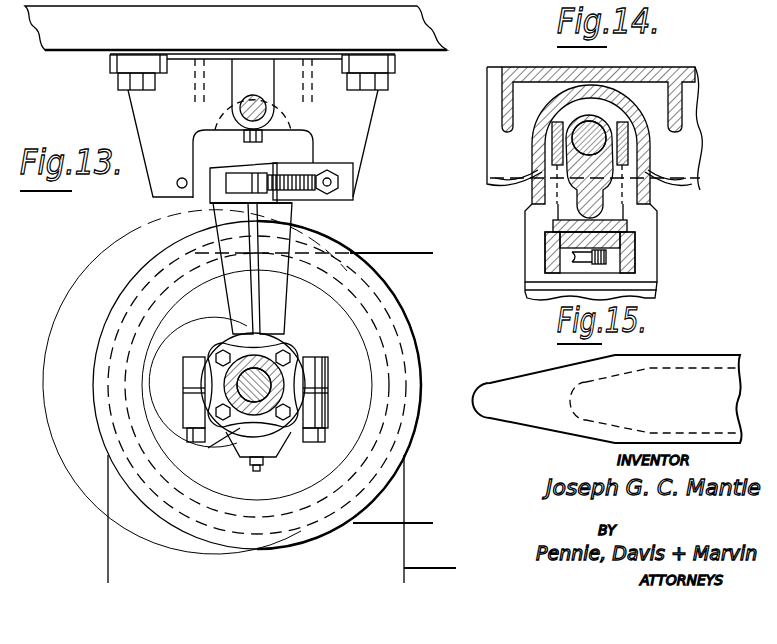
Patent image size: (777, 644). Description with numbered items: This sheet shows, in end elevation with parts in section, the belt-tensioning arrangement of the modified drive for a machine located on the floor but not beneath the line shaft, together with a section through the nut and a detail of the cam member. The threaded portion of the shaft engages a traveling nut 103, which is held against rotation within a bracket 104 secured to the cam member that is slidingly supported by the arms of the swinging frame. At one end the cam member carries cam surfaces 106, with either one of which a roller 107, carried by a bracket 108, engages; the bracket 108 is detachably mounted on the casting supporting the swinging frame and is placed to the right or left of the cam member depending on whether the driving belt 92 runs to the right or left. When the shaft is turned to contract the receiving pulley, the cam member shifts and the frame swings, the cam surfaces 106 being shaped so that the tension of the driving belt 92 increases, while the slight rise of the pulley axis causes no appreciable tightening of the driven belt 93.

In FIG. 13, the driving belt 92 is at (405, 253).
In FIG. 13, the driven belt 93 is at (443, 561).
In FIG. 14, the traveling nut 103 is at (597, 128).
In FIG. 14, the bracket 104 is at (568, 208).
In FIG. 15, the cam surfaces 106 is at (528, 376).
In FIG. 13, the roller 107 is at (305, 176).
In FIG. 13, the bracket 108 is at (345, 180).